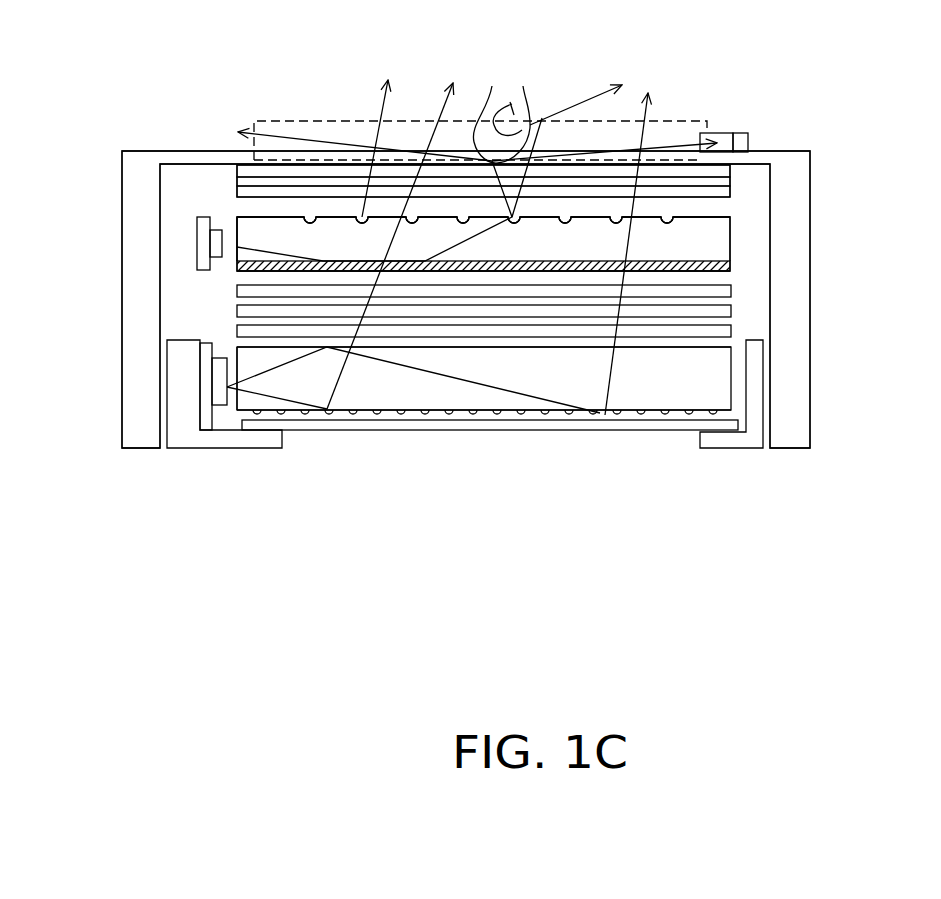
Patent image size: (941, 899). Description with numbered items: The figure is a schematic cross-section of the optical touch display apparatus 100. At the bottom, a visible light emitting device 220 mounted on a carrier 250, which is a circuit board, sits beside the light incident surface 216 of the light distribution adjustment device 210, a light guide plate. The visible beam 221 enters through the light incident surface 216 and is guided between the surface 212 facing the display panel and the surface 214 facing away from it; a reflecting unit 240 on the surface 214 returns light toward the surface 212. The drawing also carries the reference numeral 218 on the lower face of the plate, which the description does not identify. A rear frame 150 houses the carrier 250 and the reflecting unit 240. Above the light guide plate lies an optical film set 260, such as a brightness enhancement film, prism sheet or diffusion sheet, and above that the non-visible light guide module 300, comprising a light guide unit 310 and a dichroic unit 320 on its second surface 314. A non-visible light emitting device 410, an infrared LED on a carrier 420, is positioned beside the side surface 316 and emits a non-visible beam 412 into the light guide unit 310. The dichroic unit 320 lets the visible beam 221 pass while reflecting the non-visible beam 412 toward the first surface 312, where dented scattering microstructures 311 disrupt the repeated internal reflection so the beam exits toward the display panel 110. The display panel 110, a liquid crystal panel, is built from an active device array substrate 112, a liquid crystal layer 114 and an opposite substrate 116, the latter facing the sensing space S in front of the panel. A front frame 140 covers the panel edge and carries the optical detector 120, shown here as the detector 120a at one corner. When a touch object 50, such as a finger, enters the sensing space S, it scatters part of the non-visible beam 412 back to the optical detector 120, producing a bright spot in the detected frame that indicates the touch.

The optical touch display apparatus 100 is at (815, 621).
The display panel 110 is at (70, 90).
The active device array substrate 112 is at (245, 191).
The liquid crystal layer 114 is at (245, 181).
The opposite substrate 116 is at (243, 170).
The optical detector 120 is at (758, 90).
The optical detector 120a is at (722, 133).
The front frame 140 is at (795, 168).
The rear frame 150 is at (263, 440).
The light distribution adjustment device 210 is at (710, 383).
The surface 212 is at (708, 345).
The surface 214 is at (655, 413).
The light incident surface 216 is at (232, 407).
The microstructures 218 is at (473, 415).
The visible light emitting device 220 is at (217, 397).
The visible beam 221 is at (292, 403).
The reflecting unit 240 is at (367, 427).
The carrier 250 is at (203, 377).
The optical film set 260 is at (236, 280).
The non-visible light guide module 300 is at (878, 210).
The light guide unit 310 is at (723, 230).
The scattering microstructures 311 is at (703, 163).
The first surface 312 is at (707, 214).
The second surface 314 is at (688, 262).
The side surface 316 is at (233, 255).
The dichroic unit 320 is at (732, 267).
The non-visible light emitting device 410 is at (217, 231).
The non-visible beam 412 is at (302, 135).
The carrier 420 is at (203, 247).
The touch object 50 is at (508, 106).
The sensing space S is at (347, 120).